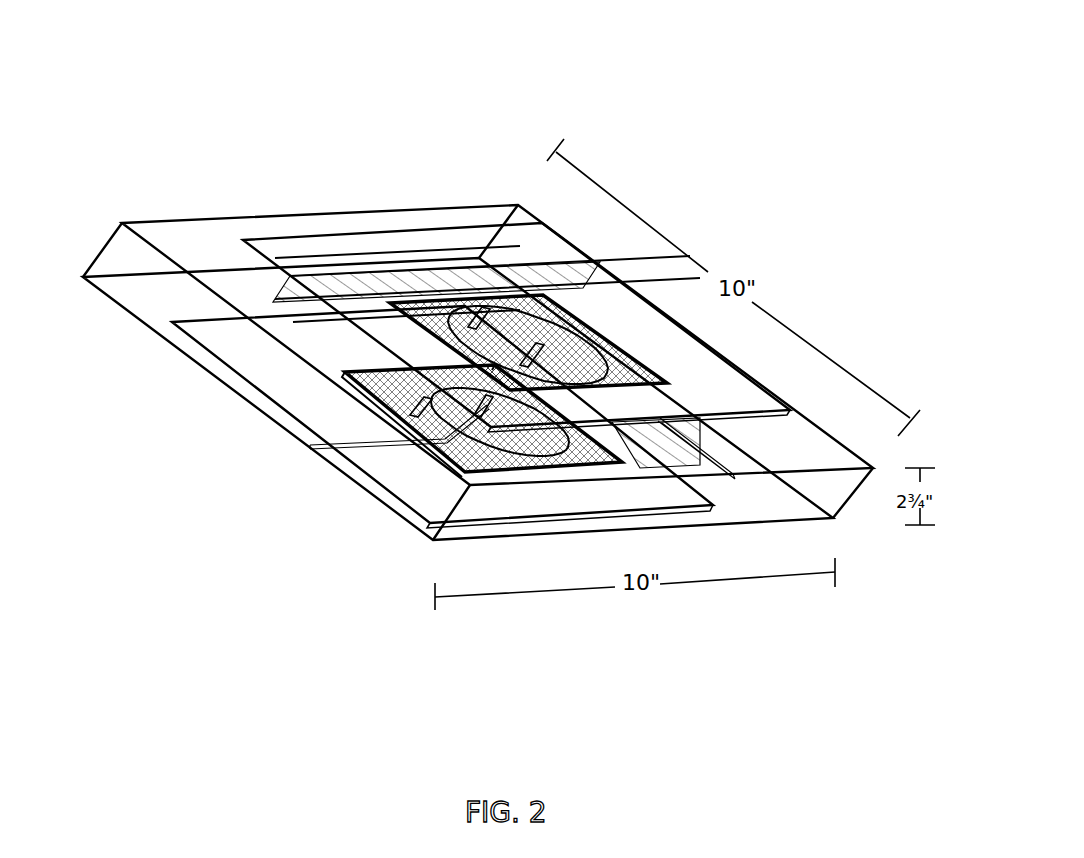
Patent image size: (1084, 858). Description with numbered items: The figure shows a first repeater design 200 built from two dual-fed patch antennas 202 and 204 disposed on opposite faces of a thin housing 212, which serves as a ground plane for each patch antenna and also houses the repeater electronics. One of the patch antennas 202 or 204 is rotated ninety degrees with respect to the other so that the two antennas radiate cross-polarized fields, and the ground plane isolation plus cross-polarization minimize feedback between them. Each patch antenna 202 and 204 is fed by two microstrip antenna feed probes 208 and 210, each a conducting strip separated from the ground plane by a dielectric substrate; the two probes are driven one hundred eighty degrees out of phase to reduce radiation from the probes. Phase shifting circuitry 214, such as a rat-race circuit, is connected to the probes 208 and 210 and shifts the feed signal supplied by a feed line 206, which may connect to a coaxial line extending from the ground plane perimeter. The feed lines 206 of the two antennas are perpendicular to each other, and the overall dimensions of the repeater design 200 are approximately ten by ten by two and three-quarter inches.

The first repeater design 200 is at (600, 86).
The dual-fed patch antenna 202 is at (262, 244).
The dual-fed patch antenna 204 is at (204, 320).
The feed line 206 is at (328, 447).
The microstrip antenna feed probe 208 is at (612, 350).
The microstrip antenna feed probe 210 is at (476, 318).
The thin housing 212 is at (262, 318).
The phase shifting circuitry 214 is at (540, 352).